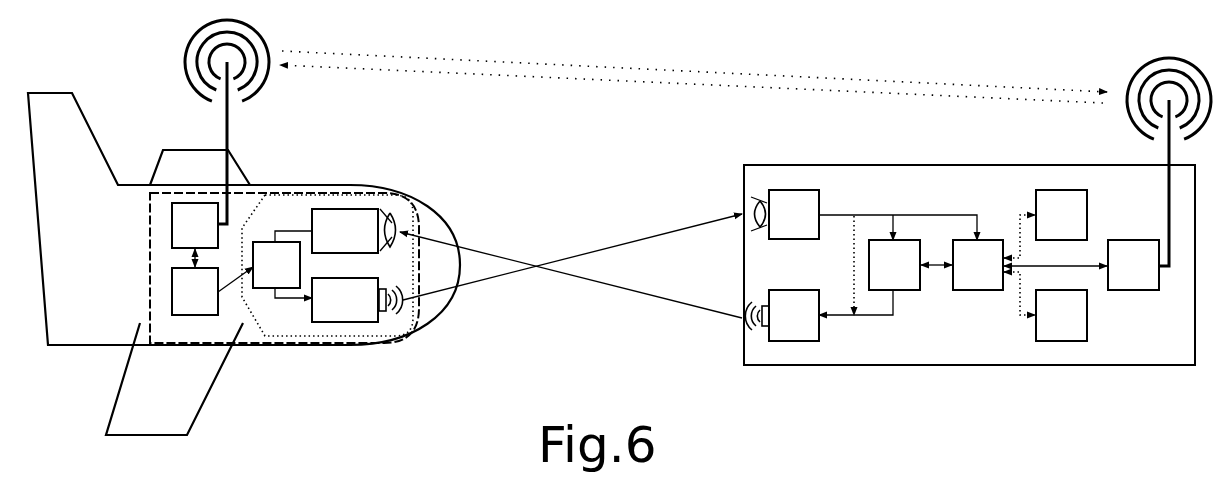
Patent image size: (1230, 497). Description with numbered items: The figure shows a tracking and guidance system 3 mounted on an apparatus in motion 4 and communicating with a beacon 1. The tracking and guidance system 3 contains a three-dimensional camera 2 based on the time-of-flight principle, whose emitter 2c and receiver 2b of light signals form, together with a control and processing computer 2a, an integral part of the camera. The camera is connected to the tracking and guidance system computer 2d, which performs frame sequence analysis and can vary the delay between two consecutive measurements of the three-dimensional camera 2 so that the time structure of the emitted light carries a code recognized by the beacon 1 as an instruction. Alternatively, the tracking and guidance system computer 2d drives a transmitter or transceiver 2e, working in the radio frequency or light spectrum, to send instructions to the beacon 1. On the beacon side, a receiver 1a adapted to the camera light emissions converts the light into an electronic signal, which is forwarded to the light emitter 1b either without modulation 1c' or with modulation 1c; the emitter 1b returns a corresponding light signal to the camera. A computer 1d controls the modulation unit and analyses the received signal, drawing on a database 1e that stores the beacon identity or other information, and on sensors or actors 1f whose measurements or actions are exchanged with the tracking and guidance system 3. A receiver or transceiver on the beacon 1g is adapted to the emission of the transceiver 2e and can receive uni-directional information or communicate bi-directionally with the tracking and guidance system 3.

The beacon 1 is at (969, 265).
The receiver 1a is at (864, 215).
The light emitter 1b is at (782, 315).
The modulation unit 1c is at (885, 277).
The forwarding means without modulation 1c' is at (841, 265).
The computer 1d is at (1030, 265).
The database 1e is at (1061, 215).
The sensors or actors 1f is at (1061, 315).
The receiver or transceiver on the beacon 1g is at (1159, 174).
The three-dimensional camera 2 is at (327, 269).
The control and processing computer 2a is at (282, 264).
The receiver of light signals 2b is at (527, 263).
The emitter of light signals 2c is at (527, 268).
The tracking and guidance system computer 2d is at (212, 282).
The transmitter or transceiver 2e is at (220, 134).
The tracking and guidance system 3 is at (284, 268).
The apparatus in motion 4 is at (244, 264).